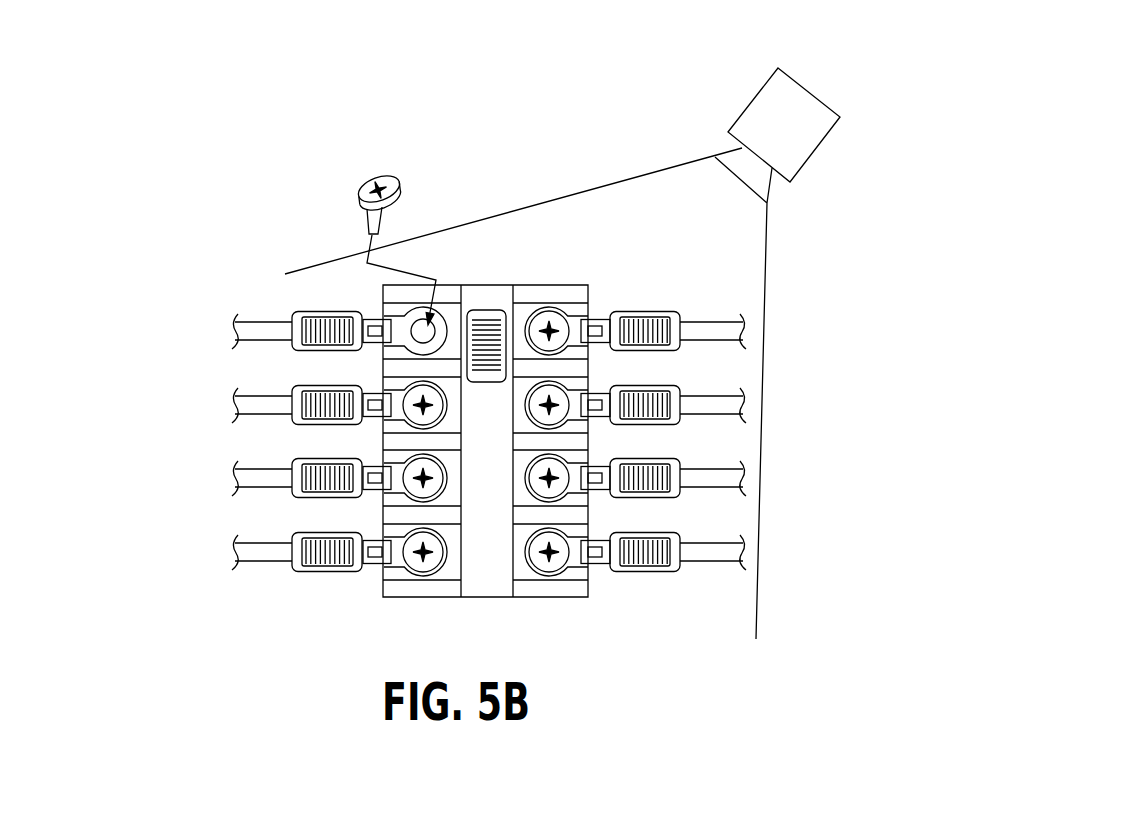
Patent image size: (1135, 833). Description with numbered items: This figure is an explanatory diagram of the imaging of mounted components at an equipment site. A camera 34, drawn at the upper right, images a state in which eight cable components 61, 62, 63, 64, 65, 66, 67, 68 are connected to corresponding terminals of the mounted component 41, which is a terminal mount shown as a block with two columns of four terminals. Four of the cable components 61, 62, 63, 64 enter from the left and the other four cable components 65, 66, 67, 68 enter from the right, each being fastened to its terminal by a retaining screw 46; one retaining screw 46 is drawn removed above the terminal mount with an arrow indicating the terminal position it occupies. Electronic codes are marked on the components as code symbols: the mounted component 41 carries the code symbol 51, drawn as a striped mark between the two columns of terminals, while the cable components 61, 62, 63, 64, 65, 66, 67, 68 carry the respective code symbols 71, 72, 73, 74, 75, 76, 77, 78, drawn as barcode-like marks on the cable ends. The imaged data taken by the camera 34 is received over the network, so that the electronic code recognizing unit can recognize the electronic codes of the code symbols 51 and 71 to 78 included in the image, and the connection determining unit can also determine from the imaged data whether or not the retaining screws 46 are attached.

The camera 34 is at (810, 90).
The mounted component 41 is at (543, 290).
The retaining screw 46 is at (393, 181).
The code symbol 51 is at (487, 310).
The cable component 61 is at (267, 334).
The cable component 62 is at (267, 408).
The cable component 63 is at (267, 481).
The cable component 64 is at (267, 555).
The cable component 65 is at (703, 558).
The cable component 66 is at (703, 484).
The cable component 67 is at (703, 411).
The cable component 68 is at (703, 337).
The code symbol 71 is at (335, 312).
The code symbol 72 is at (335, 386).
The code symbol 73 is at (335, 459).
The code symbol 74 is at (335, 533).
The code symbol 75 is at (642, 533).
The code symbol 76 is at (642, 459).
The code symbol 77 is at (642, 386).
The code symbol 78 is at (642, 312).